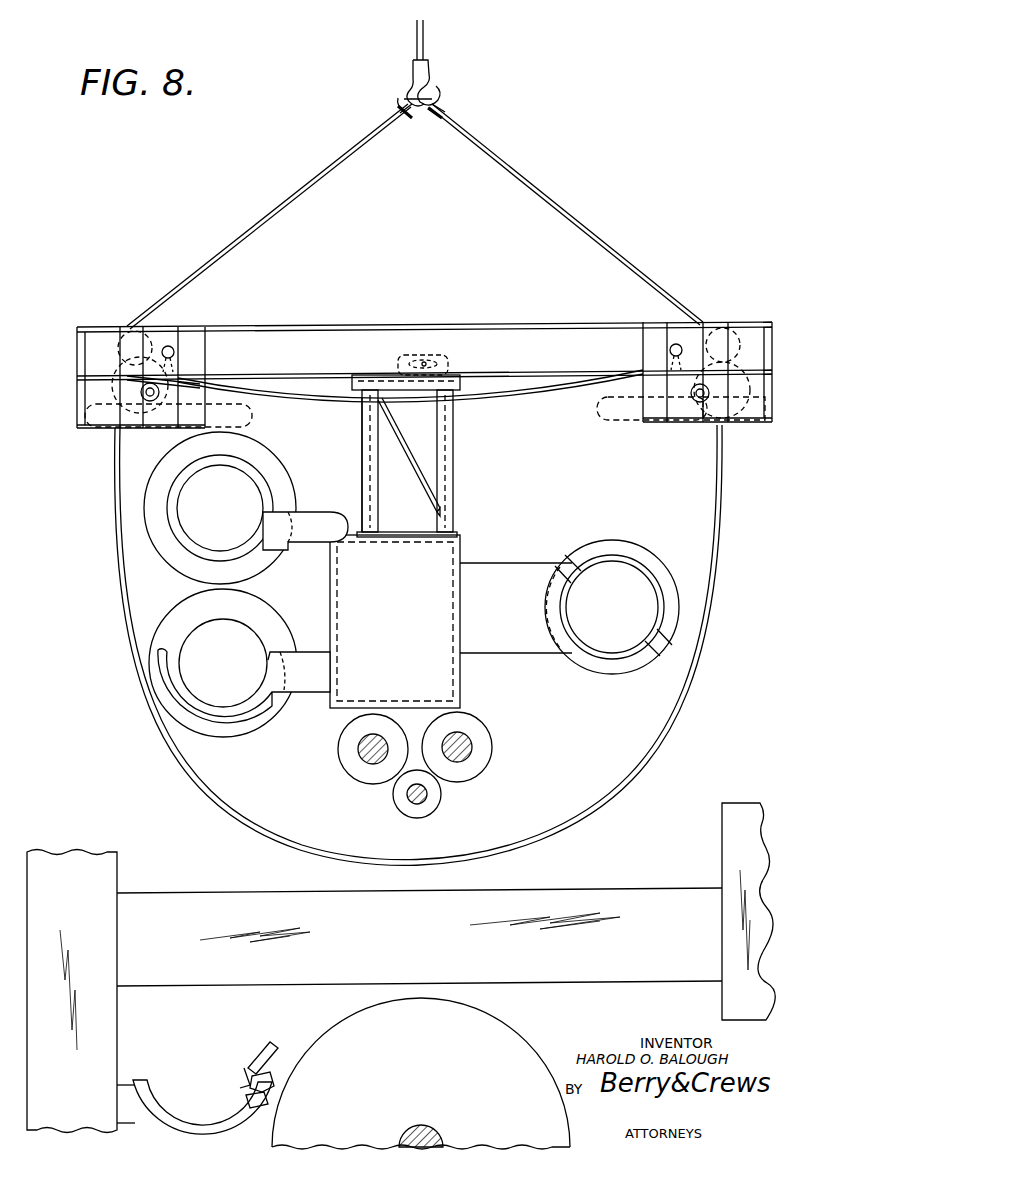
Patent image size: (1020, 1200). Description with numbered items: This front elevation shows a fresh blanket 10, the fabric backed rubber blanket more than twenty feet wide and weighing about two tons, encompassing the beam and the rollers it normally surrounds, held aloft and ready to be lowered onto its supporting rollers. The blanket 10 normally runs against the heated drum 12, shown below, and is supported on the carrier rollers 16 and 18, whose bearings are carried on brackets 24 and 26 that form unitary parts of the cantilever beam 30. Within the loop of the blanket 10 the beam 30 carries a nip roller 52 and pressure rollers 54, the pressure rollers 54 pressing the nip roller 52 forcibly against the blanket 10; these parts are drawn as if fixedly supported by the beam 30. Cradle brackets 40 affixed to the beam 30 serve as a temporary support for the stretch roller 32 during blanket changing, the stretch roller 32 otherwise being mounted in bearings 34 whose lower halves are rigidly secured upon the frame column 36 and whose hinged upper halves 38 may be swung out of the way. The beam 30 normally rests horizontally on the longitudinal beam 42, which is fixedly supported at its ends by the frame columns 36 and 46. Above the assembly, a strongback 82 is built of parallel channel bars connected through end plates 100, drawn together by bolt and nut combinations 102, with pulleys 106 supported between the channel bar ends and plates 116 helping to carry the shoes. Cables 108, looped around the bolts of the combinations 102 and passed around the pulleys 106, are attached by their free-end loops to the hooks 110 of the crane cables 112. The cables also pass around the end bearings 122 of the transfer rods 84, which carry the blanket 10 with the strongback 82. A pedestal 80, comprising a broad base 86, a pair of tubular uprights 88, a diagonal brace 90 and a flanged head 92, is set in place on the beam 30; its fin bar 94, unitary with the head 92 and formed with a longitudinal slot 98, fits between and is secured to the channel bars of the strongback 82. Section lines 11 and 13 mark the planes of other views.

The blanket 10 is at (116, 516).
The section line 11 is at (440, 294).
The heated drum 12 is at (524, 1054).
The section line 13 is at (70, 326).
The carrier roller 16 is at (270, 464).
The carrier roller 18 is at (636, 548).
The bracket 24 is at (315, 520).
The bracket 26 is at (500, 564).
The cantilever beam 30 is at (400, 640).
The stretch roller 32 is at (268, 718).
The bearing 34 is at (218, 1124).
The frame column 36 is at (112, 865).
The hinged upper half 38 is at (262, 1050).
The cradle bracket 40 is at (225, 722).
The longitudinal beam 42 is at (640, 886).
The frame column 46 is at (722, 840).
The nip roller 52 is at (428, 808).
The pressure roller 54 is at (346, 762).
The pedestal 80 is at (456, 460).
The strongback 82 is at (560, 320).
The transfer rod 84 is at (160, 410).
The base 86 is at (458, 533).
The tubular upright 88 is at (362, 456).
The diagonal brace 90 is at (420, 490).
The flanged head 92 is at (460, 382).
The fin bar 94 is at (396, 366).
The slot 98 is at (450, 362).
The end plate 100 is at (619, 420).
The bolt and nut combination 102 is at (170, 346).
The pulley 106 is at (112, 332).
The cable 108 is at (300, 182).
The hook 110 is at (430, 88).
The crane cable 112 is at (421, 46).
The plate 116 is at (712, 424).
The end bearing 122 is at (165, 382).